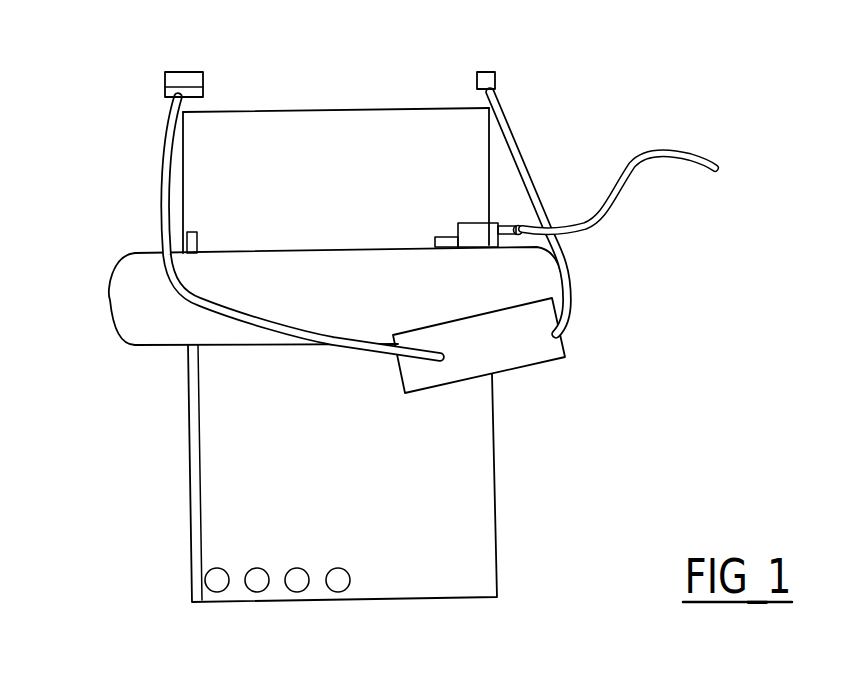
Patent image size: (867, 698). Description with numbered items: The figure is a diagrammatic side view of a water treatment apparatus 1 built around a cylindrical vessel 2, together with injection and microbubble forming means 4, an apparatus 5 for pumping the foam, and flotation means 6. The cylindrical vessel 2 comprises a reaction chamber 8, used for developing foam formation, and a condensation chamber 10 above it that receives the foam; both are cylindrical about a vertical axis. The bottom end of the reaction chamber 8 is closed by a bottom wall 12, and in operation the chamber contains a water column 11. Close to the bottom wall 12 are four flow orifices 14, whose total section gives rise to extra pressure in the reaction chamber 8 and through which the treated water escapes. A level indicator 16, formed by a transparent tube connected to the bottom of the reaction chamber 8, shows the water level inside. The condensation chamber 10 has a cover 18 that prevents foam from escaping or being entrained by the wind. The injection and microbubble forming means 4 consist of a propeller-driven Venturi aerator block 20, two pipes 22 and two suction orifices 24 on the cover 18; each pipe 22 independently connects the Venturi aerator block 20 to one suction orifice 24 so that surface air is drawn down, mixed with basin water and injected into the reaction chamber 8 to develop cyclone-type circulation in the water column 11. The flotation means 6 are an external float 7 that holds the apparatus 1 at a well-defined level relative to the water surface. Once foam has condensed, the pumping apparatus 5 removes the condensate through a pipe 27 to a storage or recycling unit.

The water treatment apparatus 1 is at (620, 487).
The cylindrical vessel 2 is at (470, 477).
The injection and microbubble forming means 4 is at (585, 322).
The apparatus for pumping the foam 5 is at (477, 223).
The flotation means 6 is at (108, 293).
The external float 7 is at (137, 322).
The reaction chamber 8 is at (483, 565).
The condensation chamber 10 is at (420, 133).
The water column 11 is at (477, 525).
The bottom wall 12 is at (483, 598).
The flow orifices 14 is at (338, 585).
The level indicator 16 is at (190, 482).
The cover 18 is at (325, 110).
The Venturi aerator block 20 is at (523, 350).
The pipes 22 is at (160, 223).
The suction orifices 24 is at (183, 72).
The pipe 27 is at (692, 160).